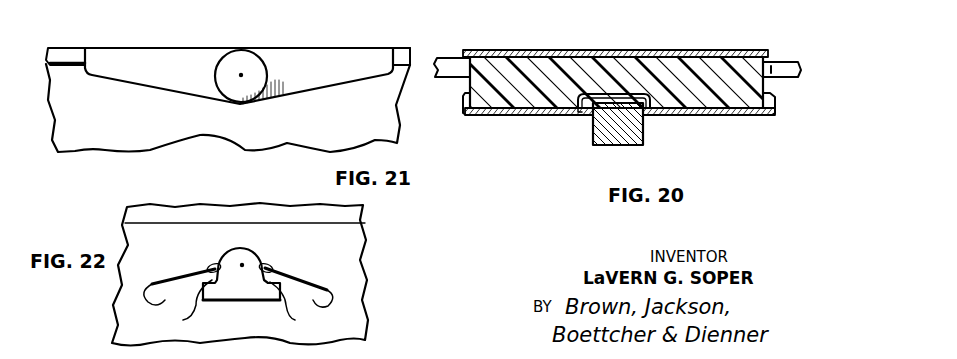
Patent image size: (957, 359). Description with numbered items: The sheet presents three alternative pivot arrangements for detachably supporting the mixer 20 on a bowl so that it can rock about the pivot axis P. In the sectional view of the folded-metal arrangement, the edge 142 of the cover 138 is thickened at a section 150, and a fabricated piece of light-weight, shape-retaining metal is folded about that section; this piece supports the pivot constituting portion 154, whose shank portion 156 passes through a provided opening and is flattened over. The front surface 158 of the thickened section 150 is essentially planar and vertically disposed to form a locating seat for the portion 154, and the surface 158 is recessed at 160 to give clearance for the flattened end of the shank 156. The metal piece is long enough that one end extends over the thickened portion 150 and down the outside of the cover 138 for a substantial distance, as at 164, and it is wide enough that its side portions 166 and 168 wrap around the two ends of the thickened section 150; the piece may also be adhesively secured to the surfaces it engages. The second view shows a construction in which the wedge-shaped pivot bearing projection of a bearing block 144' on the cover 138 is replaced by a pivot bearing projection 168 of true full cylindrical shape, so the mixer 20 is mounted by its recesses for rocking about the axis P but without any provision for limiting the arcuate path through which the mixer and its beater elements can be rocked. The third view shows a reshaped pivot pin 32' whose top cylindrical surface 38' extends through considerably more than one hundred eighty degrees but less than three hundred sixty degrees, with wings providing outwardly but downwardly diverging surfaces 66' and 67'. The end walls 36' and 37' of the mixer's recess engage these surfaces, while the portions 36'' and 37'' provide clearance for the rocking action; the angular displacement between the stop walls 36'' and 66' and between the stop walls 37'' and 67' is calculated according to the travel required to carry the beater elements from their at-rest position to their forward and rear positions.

In FIG. 22, the mixer 20 is at (360, 243).
In FIG. 22, the pivot pin 32' is at (250, 261).
In FIG. 22, the end wall of recess 36' is at (187, 269).
In FIG. 22, the clearance portion (stop wall) 36'' is at (141, 299).
In FIG. 22, the end wall of recess 37' is at (292, 270).
In FIG. 22, the clearance portion (stop wall) 37'' is at (339, 302).
In FIG. 22, the top cylindrical surface 38' is at (209, 234).
In FIG. 22, the outwardly and downwardly diverging surface 66' is at (181, 307).
In FIG. 22, the outwardly and downwardly diverging surface 67' is at (298, 308).
In FIG. 21, the cover 138 is at (388, 128).
In FIG. 21, the edge portion of cover 142 is at (72, 53).
In FIG. 20, the edge portion of cover 142 is at (451, 62).
In FIG. 21, the bearing block 144' is at (247, 63).
In FIG. 20, the thickened section 150 is at (596, 65).
In FIG. 20, the pivot constituting portion 154 is at (607, 146).
In FIG. 20, the shank portion 156 is at (631, 95).
In FIG. 20, the front surface 158 is at (703, 114).
In FIG. 20, the recess 160 is at (585, 112).
In FIG. 20, the extended end portion of metal piece 164 is at (728, 50).
In FIG. 20, the side portion of metal piece 166 is at (464, 100).
In FIG. 21, the side portion of metal piece / pivot bearing projection 168 is at (252, 57).
In FIG. 20, the side portion of metal piece / pivot bearing projection 168 is at (768, 110).
In FIG. 21, the pivot axis P is at (238, 75).
In FIG. 22, the pivot axis P is at (240, 265).